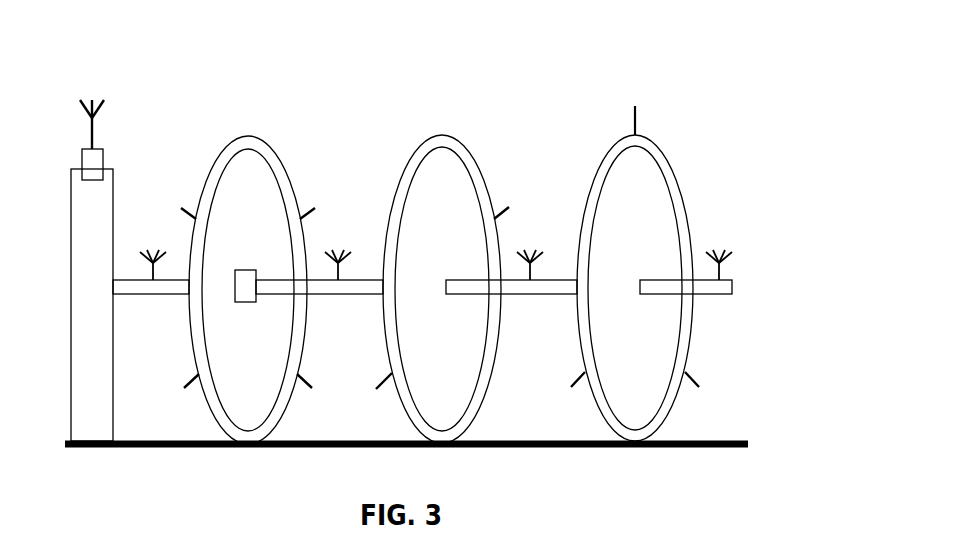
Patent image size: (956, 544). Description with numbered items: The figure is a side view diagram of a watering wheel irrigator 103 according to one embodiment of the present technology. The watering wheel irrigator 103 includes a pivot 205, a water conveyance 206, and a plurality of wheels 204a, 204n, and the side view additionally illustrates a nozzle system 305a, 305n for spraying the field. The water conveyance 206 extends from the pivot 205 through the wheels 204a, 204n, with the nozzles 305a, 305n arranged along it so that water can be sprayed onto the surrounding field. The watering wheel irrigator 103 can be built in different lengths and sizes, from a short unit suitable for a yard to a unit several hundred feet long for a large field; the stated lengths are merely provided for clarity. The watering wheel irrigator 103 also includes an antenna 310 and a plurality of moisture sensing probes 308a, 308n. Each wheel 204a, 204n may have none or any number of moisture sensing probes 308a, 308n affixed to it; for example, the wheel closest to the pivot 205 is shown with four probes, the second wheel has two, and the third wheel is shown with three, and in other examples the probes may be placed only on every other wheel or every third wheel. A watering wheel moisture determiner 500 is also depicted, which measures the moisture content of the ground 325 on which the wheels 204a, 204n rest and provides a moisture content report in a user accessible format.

The watering wheel irrigator 103 is at (207, 54).
The pivot 205 is at (113, 203).
The antenna 310 is at (92, 140).
The watering wheel moisture determiner 500 is at (103, 158).
The water conveyance 206 is at (735, 295).
The nozzle system 305a is at (152, 283).
The nozzle system 305n is at (721, 268).
The wheel 204a is at (272, 147).
The wheel 204n is at (654, 143).
The moisture sensing probe 308a is at (185, 390).
The moisture sensing probe 308n is at (576, 389).
The ground 325 is at (123, 451).